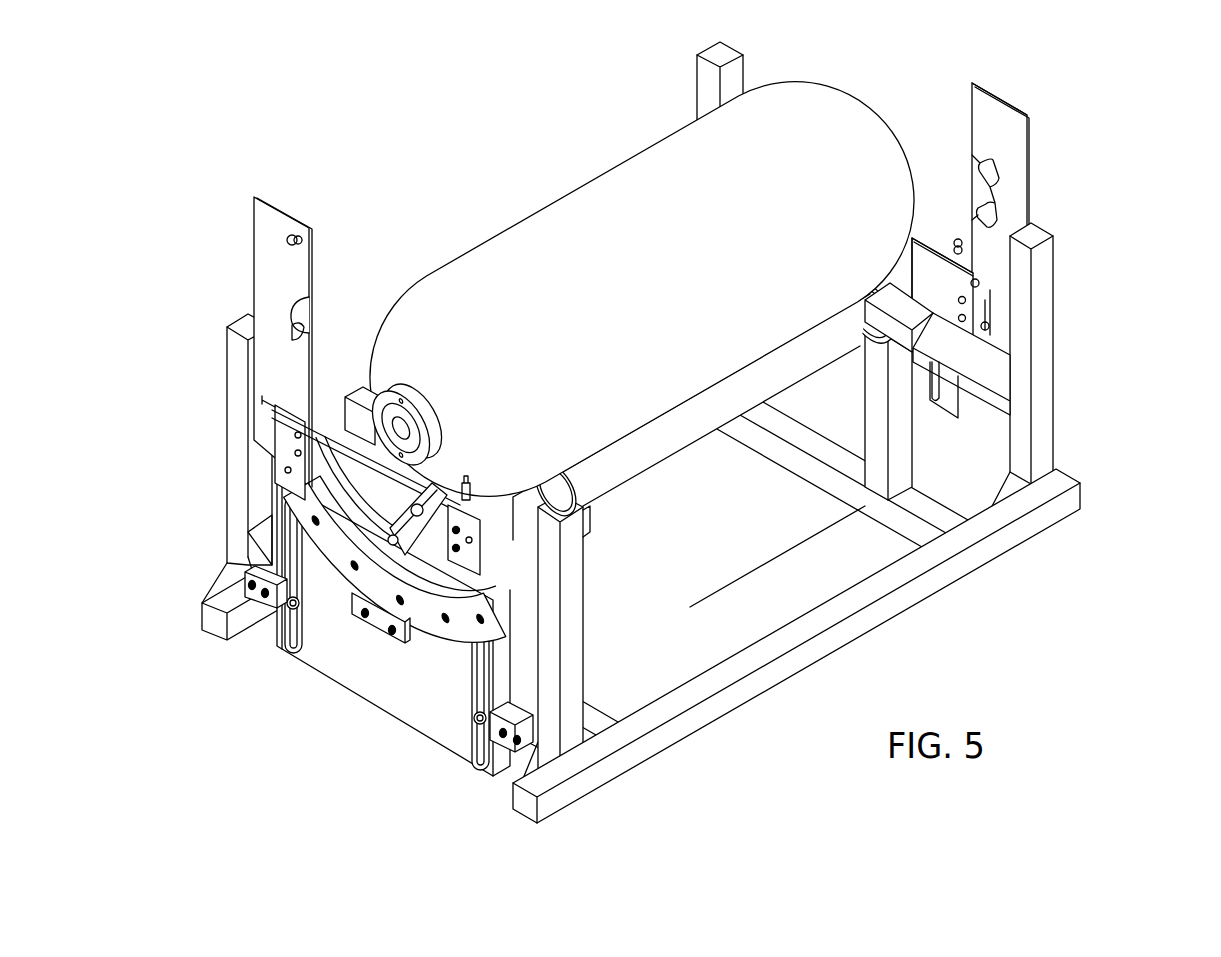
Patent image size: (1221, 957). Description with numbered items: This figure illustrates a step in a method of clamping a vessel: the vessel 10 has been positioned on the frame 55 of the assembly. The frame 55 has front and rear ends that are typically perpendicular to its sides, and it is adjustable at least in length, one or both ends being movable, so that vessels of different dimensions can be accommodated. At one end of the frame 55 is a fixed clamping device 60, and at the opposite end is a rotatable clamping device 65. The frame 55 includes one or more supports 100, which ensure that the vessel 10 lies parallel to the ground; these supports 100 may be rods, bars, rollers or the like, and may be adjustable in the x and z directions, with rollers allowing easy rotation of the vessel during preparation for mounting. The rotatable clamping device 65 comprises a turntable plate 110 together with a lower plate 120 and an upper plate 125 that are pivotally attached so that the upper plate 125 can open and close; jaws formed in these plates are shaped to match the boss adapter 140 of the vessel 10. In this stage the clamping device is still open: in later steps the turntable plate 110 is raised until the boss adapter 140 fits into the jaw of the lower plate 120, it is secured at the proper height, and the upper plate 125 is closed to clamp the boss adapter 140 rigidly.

The vessel 10 is at (590, 178).
The frame 55 is at (760, 696).
The fixed clamping device 60 is at (1120, 197).
The rotatable clamping device 65 is at (353, 717).
The supports 100 is at (650, 469).
The turntable plate 110 is at (325, 675).
The lower plate 120 is at (370, 462).
The upper plate 125 is at (272, 215).
The boss adapter 140 is at (410, 410).